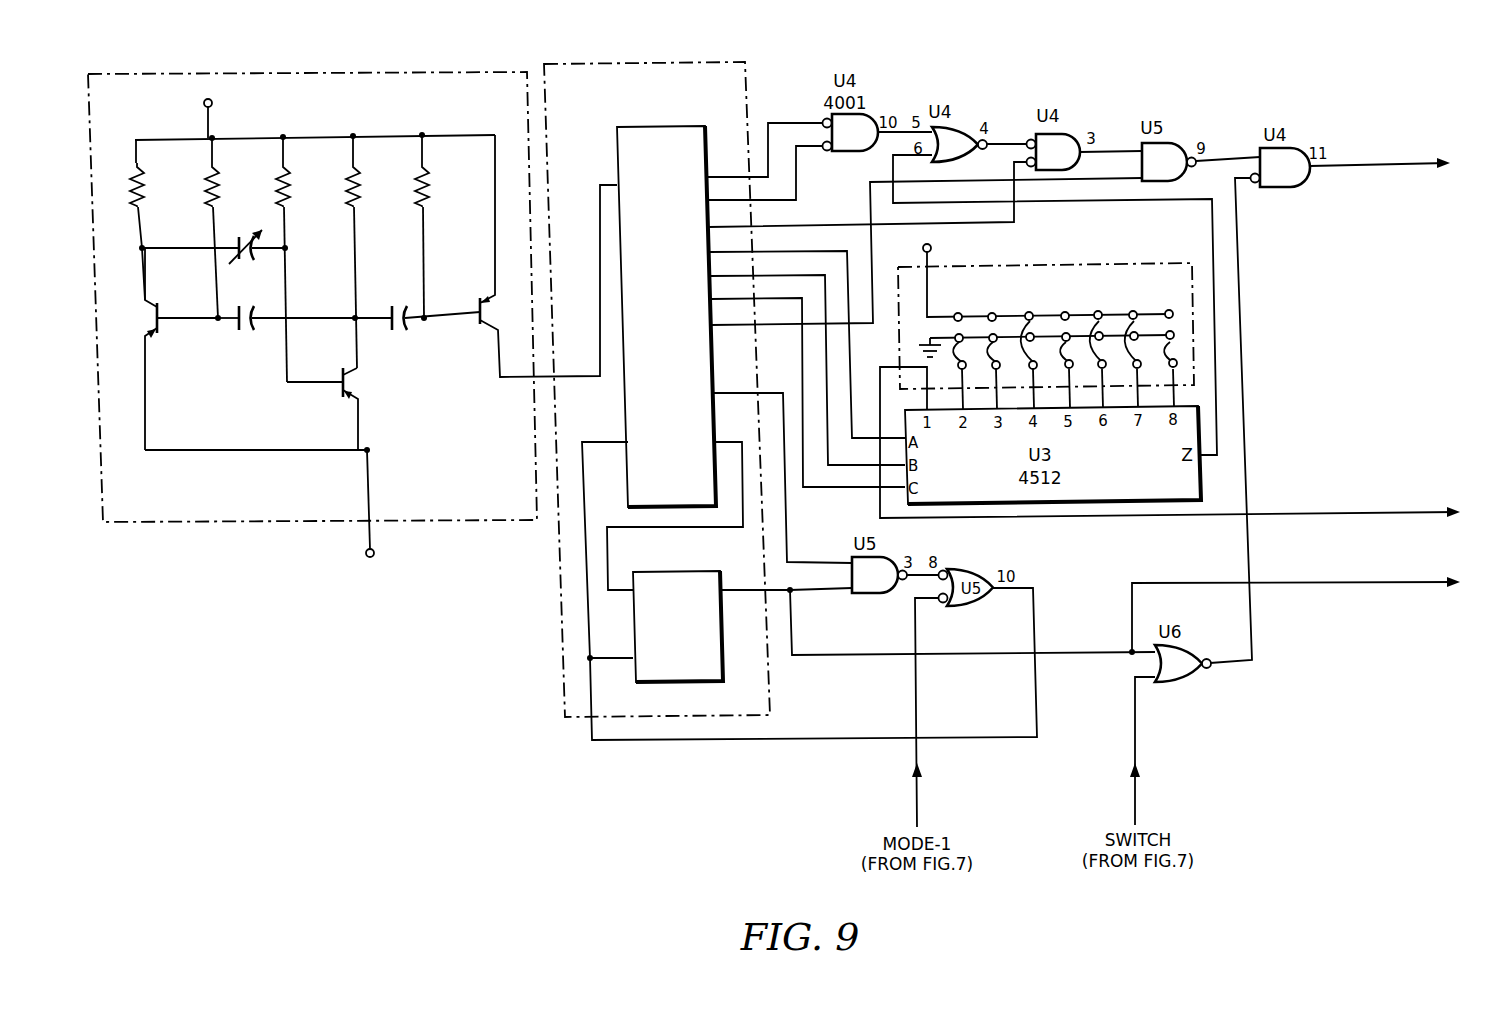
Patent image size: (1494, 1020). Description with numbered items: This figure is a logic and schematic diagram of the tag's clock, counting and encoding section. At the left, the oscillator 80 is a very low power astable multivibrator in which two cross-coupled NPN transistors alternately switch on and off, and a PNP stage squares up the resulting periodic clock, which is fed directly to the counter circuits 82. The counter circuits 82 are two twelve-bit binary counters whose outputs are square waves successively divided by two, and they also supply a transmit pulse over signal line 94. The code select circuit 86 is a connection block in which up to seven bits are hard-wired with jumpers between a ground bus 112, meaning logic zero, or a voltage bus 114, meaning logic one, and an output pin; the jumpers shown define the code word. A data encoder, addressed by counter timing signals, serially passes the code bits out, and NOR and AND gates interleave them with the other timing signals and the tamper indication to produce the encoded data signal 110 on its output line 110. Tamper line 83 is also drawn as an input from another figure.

The oscillator 80 is at (196, 523).
The counter circuits 82 is at (564, 658).
The tamper input line 83 is at (1290, 518).
The code select circuit 86 is at (1165, 262).
The signal line 94 is at (1312, 586).
The encoded data signal 110 is at (1352, 170).
The ground bus 112 is at (934, 339).
The voltage bus 114 is at (934, 283).